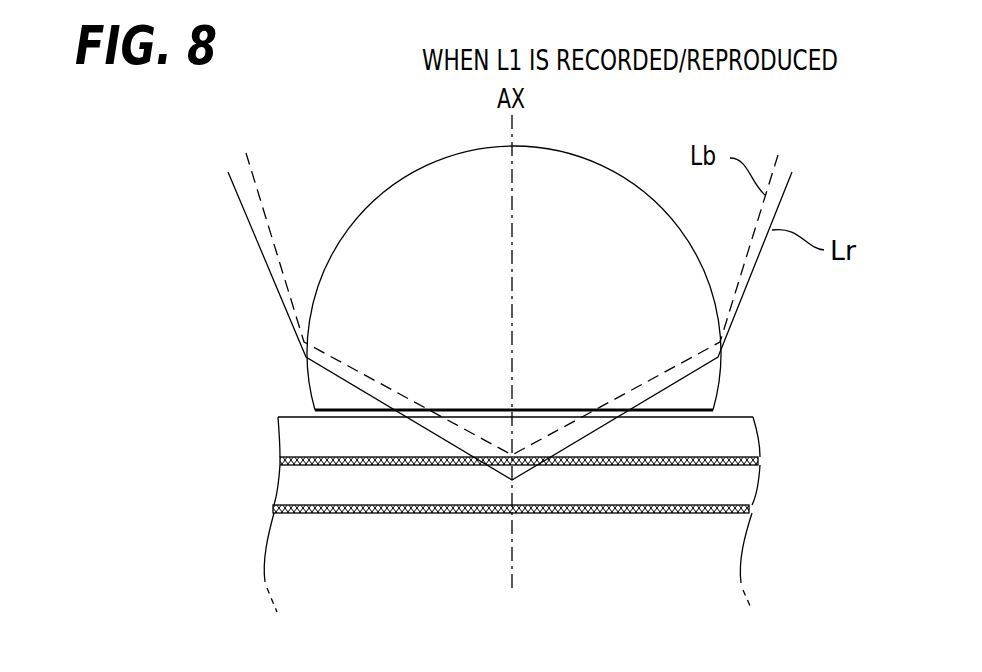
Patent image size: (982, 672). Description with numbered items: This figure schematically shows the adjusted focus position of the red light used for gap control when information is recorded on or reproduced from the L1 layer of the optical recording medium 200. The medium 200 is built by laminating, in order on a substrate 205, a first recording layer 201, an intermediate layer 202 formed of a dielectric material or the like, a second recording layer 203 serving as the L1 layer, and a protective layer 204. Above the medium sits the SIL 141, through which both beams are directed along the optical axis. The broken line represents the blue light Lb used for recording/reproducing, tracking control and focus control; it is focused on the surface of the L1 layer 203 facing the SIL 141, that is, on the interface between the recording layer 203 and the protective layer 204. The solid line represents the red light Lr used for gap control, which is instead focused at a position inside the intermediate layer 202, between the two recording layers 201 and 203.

The SIL 141 is at (418, 170).
The optical recording medium 200 is at (293, 414).
The recording layer 201 is at (712, 508).
The intermediate layer 202 is at (288, 490).
The recording layer 203 is at (712, 458).
The protective layer 204 is at (293, 442).
The substrate 205 is at (288, 560).